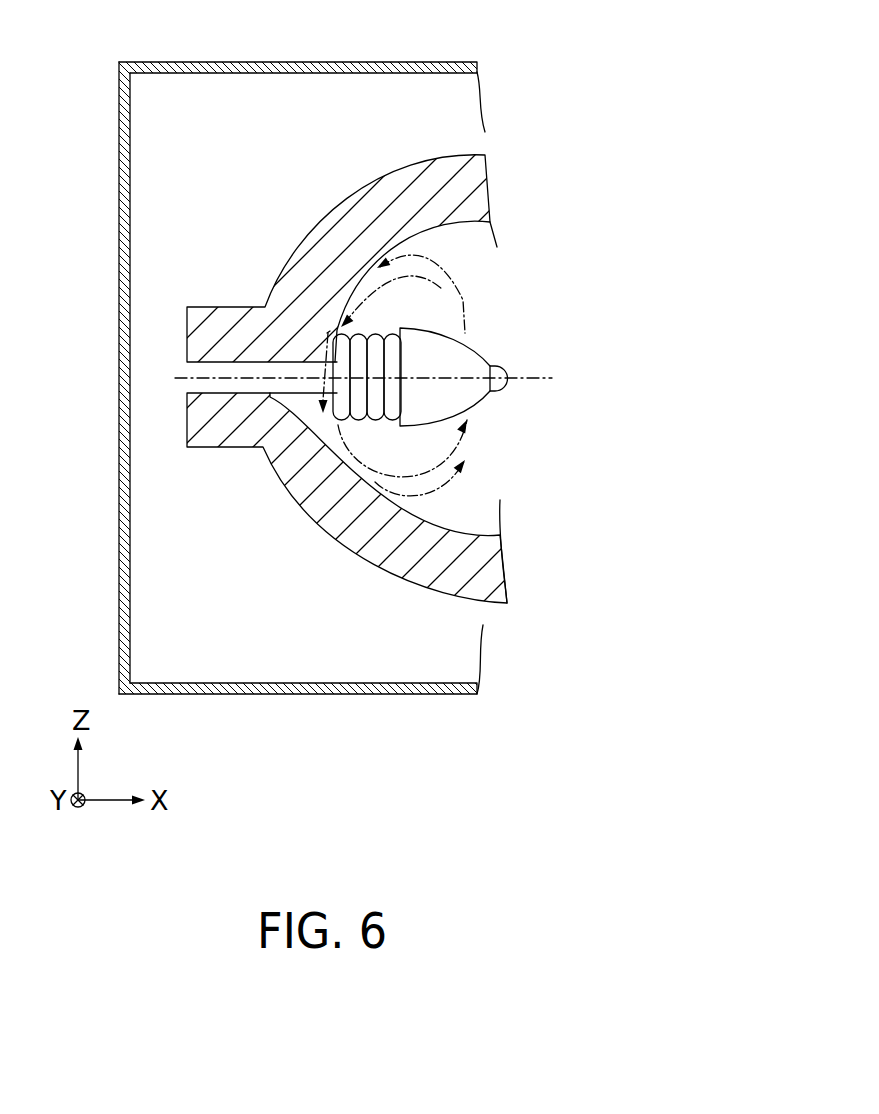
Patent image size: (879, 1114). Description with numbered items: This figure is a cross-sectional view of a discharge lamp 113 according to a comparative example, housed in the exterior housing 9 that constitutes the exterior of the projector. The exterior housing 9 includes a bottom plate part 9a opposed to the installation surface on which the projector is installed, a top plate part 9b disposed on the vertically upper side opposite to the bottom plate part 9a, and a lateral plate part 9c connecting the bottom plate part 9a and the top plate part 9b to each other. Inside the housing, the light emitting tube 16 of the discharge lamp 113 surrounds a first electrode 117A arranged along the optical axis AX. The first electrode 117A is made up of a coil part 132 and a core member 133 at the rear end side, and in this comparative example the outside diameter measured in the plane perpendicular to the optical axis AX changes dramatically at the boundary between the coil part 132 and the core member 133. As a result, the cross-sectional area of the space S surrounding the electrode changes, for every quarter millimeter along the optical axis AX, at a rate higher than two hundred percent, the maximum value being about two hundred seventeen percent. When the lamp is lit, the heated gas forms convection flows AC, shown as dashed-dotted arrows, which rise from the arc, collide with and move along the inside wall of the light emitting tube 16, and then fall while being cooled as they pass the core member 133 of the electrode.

The exterior housing 9 is at (272, 381).
The bottom plate part 9a is at (177, 696).
The top plate part 9b is at (258, 62).
The lateral plate part 9c is at (119, 102).
The discharge lamp 113 is at (347, 343).
The light emitting tube 16 is at (453, 170).
The core member 133 is at (297, 384).
The coil part 132 is at (365, 413).
The first electrode 117A is at (486, 349).
The convection flows AC is at (413, 257).
The space S is at (327, 333).
The optical axis AX is at (537, 378).